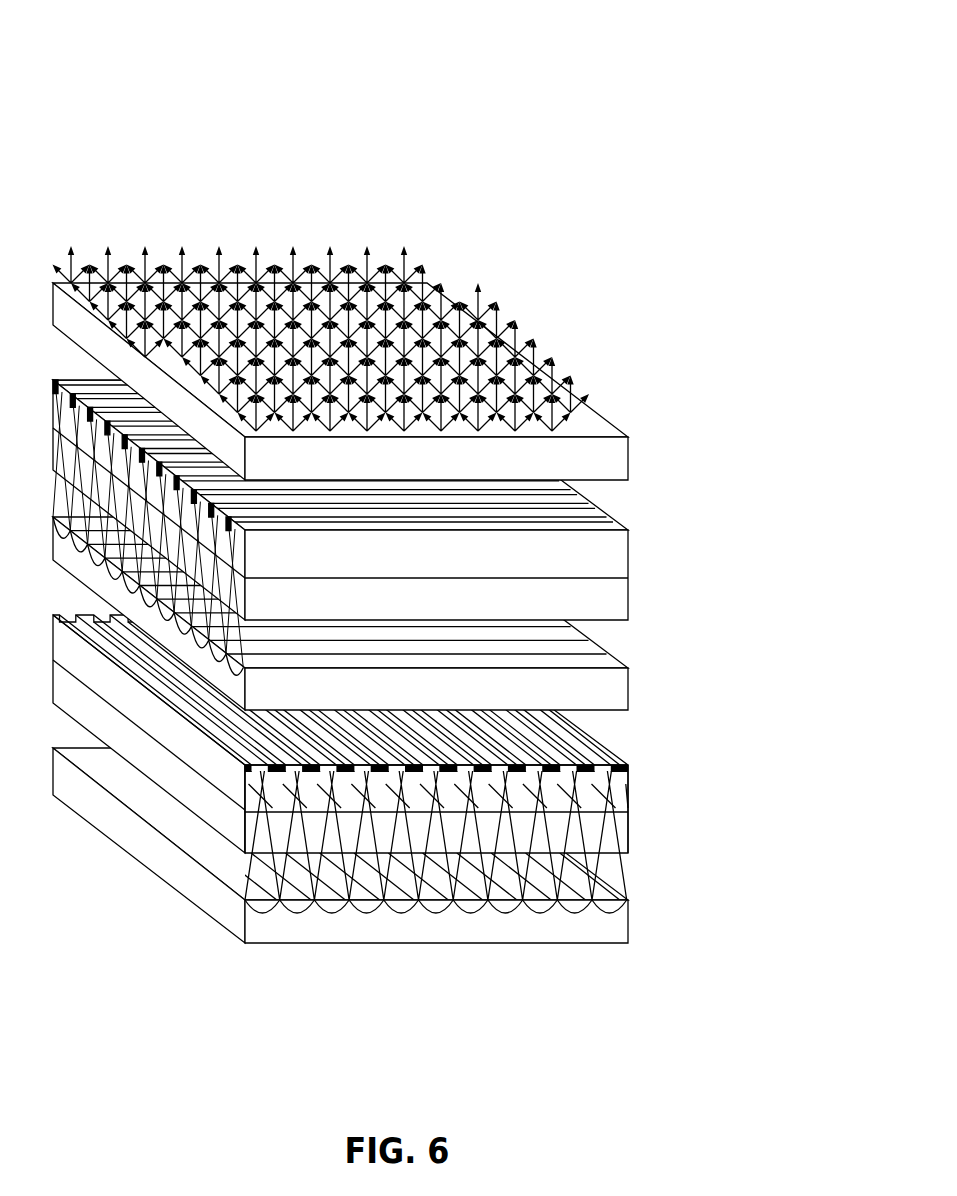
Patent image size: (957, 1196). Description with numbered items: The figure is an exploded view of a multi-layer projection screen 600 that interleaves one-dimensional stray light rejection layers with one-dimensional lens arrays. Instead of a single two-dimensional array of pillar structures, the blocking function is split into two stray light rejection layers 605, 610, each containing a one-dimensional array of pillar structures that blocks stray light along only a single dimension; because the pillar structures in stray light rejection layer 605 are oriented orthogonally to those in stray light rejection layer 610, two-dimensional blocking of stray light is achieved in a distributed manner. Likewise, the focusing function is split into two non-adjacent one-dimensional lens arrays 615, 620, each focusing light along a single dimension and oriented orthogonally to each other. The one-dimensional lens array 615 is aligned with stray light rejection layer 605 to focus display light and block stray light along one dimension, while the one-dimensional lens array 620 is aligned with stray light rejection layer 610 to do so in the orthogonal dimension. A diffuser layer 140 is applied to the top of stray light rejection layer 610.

The multi-layer projection screen 600 is at (768, 63).
The diffuser layer 140 is at (628, 456).
The stray light rejection layer 610 is at (645, 617).
The 1D lens array 620 is at (628, 695).
The stray light rejection layer 605 is at (645, 853).
The 1D lens array 615 is at (628, 922).